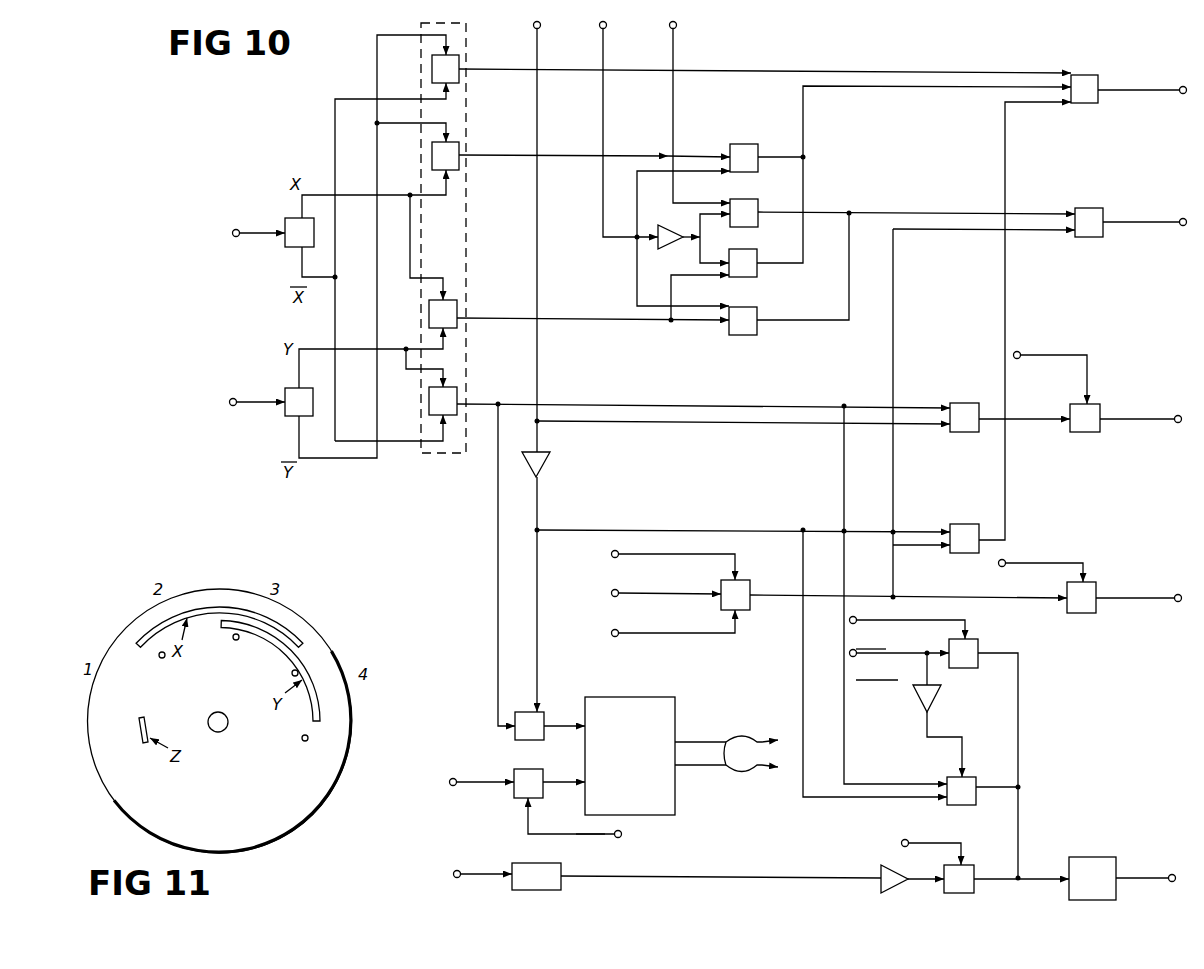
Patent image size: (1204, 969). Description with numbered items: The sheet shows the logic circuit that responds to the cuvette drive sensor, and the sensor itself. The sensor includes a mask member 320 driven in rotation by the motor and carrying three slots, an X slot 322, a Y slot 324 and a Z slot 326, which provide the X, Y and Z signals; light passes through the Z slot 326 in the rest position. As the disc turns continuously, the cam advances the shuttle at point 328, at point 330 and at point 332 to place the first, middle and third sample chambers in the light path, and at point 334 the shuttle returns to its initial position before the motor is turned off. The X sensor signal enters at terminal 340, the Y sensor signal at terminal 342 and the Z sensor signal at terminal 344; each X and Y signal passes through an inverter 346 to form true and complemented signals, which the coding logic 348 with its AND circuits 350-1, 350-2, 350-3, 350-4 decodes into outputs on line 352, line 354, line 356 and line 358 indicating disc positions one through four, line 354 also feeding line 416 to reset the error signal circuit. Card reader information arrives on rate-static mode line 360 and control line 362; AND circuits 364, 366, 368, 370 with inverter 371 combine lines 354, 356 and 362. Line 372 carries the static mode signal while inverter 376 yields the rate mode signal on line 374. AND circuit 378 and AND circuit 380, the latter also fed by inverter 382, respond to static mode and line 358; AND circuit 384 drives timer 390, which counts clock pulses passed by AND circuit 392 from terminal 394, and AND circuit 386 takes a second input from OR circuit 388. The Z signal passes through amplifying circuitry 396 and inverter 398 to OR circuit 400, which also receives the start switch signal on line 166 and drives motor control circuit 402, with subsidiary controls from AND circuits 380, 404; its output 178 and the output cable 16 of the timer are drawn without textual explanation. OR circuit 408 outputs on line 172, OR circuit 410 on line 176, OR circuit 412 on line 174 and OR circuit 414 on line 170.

In FIG. 10, the X light sensor terminal 340 is at (232, 228).
In FIG. 10, the Y light sensor terminal 342 is at (230, 399).
In FIG. 10, the Z light sensor terminal 344 is at (286, 247).
In FIG. 10, the inverter 346 is at (286, 417).
In FIG. 10, the coding logic 348 is at (421, 25).
In FIG. 10, the AND circuit 350-1 is at (460, 62).
In FIG. 10, the AND circuit 350-2 is at (461, 148).
In FIG. 10, the AND circuit 350-3 is at (460, 307).
In FIG. 10, the AND circuit 350-4 is at (458, 395).
In FIG. 10, the position 1 output line 352 is at (512, 72).
In FIG. 10, the position 2 output line 354 is at (516, 156).
In FIG. 10, the position 3 output line 356 is at (517, 319).
In FIG. 10, the position 4 output line 358 is at (488, 407).
In FIG. 10, the rate-static mode line 360 is at (540, 28).
In FIG. 10, the control information line 362 is at (606, 30).
In FIG. 10, the AND circuit 364 is at (747, 143).
In FIG. 10, the AND circuit 366 is at (773, 186).
In FIG. 10, the AND circuit 368 is at (752, 250).
In FIG. 10, the AND circuit 370 is at (757, 307).
In FIG. 10, the inverter 371 is at (676, 232).
In FIG. 10, the static mode signal line 372 is at (697, 423).
In FIG. 10, the rate mode signal line 374 is at (539, 511).
In FIG. 10, the inverter 376 is at (550, 464).
In FIG. 10, the AND circuit 378 is at (967, 403).
In FIG. 10, the AND circuit 380 is at (947, 783).
In FIG. 10, the inverter 382 is at (913, 693).
In FIG. 10, the AND circuit 384 is at (543, 712).
In FIG. 10, the AND circuit 386 is at (967, 523).
In FIG. 10, the OR circuit 388 is at (750, 580).
In FIG. 10, the timer 390 is at (650, 697).
In FIG. 10, the AND circuit 392 is at (527, 769).
In FIG. 10, the clock signal terminal 394 is at (450, 786).
In FIG. 10, the amplifying circuitry 396 is at (562, 888).
In FIG. 10, the inverter 398 is at (880, 868).
In FIG. 10, the OR circuit 400 is at (960, 893).
In FIG. 10, the motor control circuit 402 is at (1097, 857).
In FIG. 10, the AND circuit 404 is at (974, 669).
In FIG. 10, the OR circuit 408 is at (1095, 615).
In FIG. 10, the OR circuit 410 is at (1095, 432).
In FIG. 10, the OR circuit 412 is at (1100, 238).
In FIG. 10, the OR circuit 414 is at (1090, 104).
In FIG. 10, the error reset line 416 is at (676, 38).
In FIG. 10, the start switch line 166 is at (935, 842).
In FIG. 10, the zeroing output line 170 is at (1148, 88).
In FIG. 10, the filter reset output line 172 is at (1158, 597).
In FIG. 10, the switch control output line 174 is at (1150, 221).
In FIG. 10, the strobe output line 176 is at (1147, 417).
In FIG. 10, the output terminal 178 is at (1150, 877).
In FIG. 10, the output cable 16 is at (726, 754).
In FIG. 11, the mask member 320 is at (250, 853).
In FIG. 11, the X slot 322 is at (198, 608).
In FIG. 11, the Y slot 324 is at (305, 682).
In FIG. 11, the Z slot 326 is at (140, 735).
In FIG. 11, the first advance point 328 is at (160, 657).
In FIG. 11, the second advance point 330 is at (234, 640).
In FIG. 11, the third advance point 332 is at (292, 674).
In FIG. 11, the return point 334 is at (303, 740).